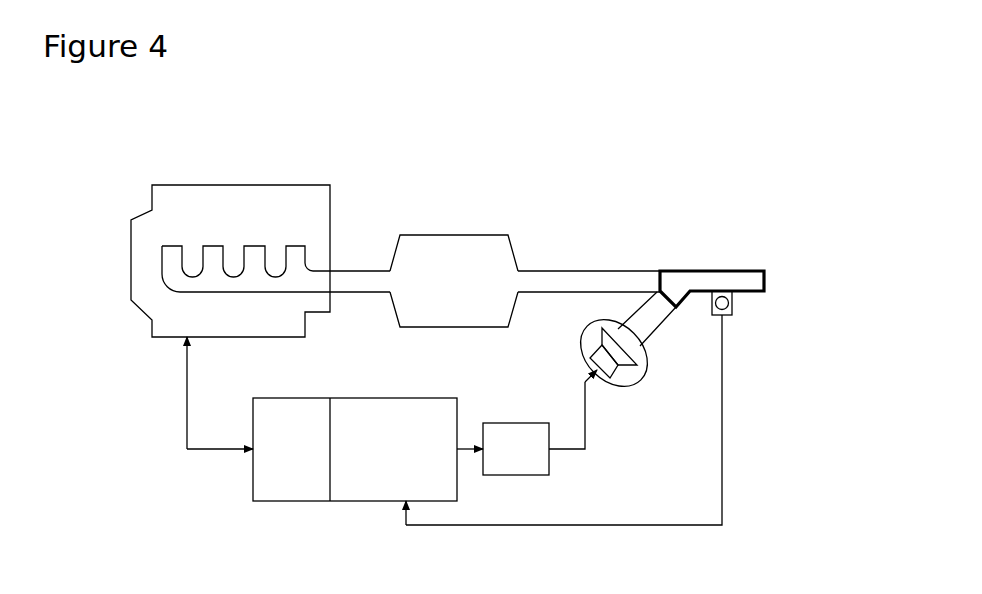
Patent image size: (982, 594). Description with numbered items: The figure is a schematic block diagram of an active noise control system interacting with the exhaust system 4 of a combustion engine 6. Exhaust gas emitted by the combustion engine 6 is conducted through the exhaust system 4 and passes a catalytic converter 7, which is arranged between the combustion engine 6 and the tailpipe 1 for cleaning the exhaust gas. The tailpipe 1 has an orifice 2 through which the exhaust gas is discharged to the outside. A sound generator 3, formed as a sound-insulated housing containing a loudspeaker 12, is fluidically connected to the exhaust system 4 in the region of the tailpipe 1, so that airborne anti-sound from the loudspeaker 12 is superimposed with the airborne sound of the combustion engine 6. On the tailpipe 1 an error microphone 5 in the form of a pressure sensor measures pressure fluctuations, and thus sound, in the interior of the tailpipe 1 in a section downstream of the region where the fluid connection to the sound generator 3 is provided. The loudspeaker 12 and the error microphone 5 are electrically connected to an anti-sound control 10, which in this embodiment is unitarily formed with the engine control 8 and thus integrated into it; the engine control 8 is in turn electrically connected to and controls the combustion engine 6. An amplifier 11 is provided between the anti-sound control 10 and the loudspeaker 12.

The tailpipe 1 is at (698, 270).
The orifice 2 is at (765, 279).
The sound generator 3 is at (642, 378).
The exhaust system 4 is at (610, 270).
The error microphone 5 is at (728, 308).
The combustion engine 6 is at (295, 210).
The catalytic converter 7 is at (458, 248).
The engine control 8 is at (287, 472).
The anti-sound control 10 is at (396, 483).
The amplifier 11 is at (540, 468).
The loudspeaker 12 is at (612, 385).